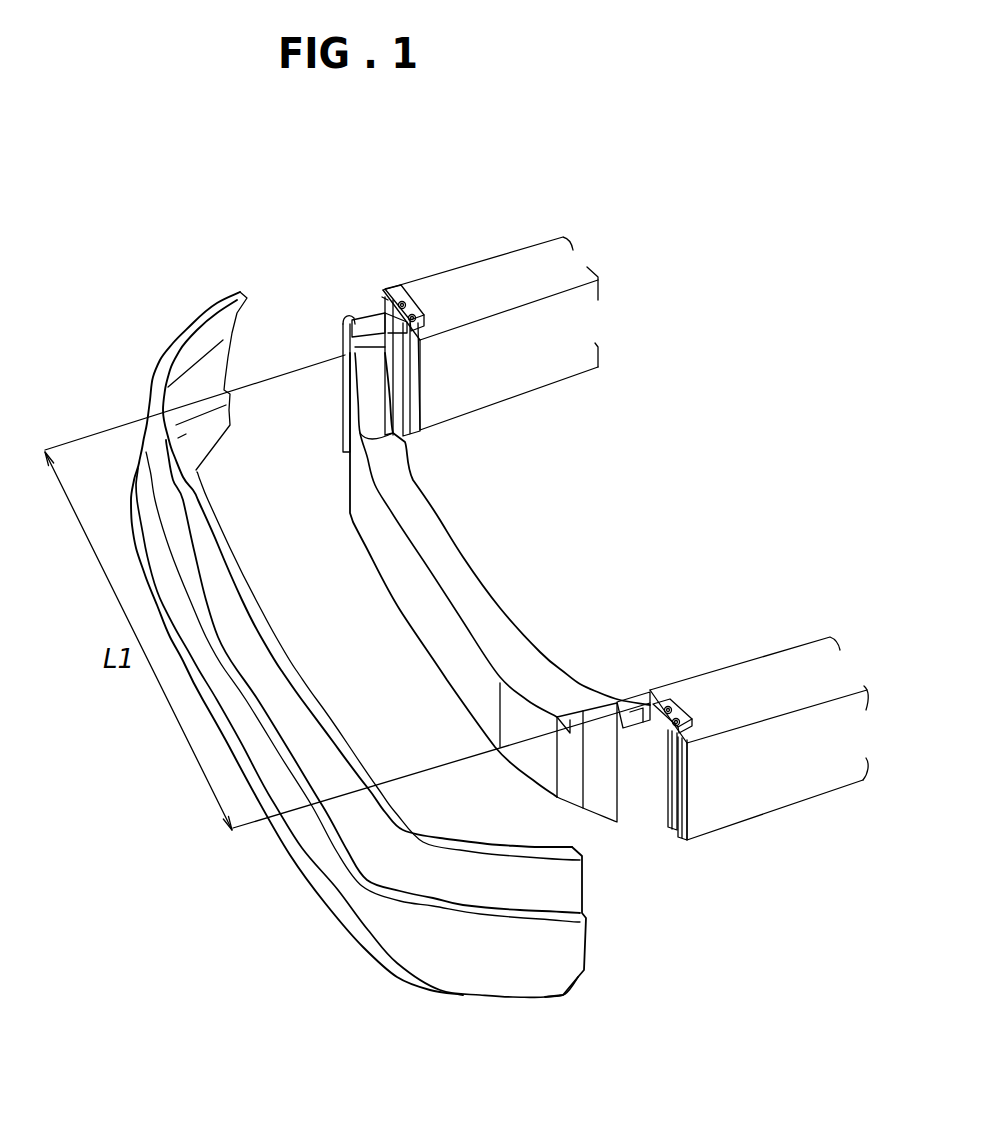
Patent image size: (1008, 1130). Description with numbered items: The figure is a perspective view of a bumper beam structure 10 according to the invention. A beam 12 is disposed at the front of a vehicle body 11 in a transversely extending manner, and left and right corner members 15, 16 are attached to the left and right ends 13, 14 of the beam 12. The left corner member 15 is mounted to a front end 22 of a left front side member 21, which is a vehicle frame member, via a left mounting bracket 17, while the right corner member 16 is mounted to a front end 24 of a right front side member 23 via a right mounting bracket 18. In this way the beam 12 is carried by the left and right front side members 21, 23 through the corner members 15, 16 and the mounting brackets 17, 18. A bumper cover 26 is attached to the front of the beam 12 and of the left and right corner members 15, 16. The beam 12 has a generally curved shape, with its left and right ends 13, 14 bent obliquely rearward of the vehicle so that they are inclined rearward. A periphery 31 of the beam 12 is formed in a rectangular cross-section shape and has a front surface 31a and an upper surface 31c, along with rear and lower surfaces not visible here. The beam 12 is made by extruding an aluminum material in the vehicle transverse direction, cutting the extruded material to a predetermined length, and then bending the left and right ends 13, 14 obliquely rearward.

The bumper beam structure 10 is at (293, 297).
The vehicle body 11 is at (563, 291).
The beam 12 is at (456, 588).
The left end 13 is at (528, 760).
The right end 14 is at (358, 408).
The left corner member 15 is at (640, 793).
The right corner member 16 is at (363, 298).
The left mounting bracket 17 is at (677, 712).
The right mounting bracket 18 is at (403, 300).
The left front side member 21 is at (769, 782).
The front end 22 is at (697, 820).
The right front side member 23 is at (583, 300).
The front end 24 is at (450, 403).
The bumper cover 26 is at (340, 880).
The periphery 31 is at (463, 575).
The front surface 31a is at (378, 548).
The upper surface 31c is at (477, 597).